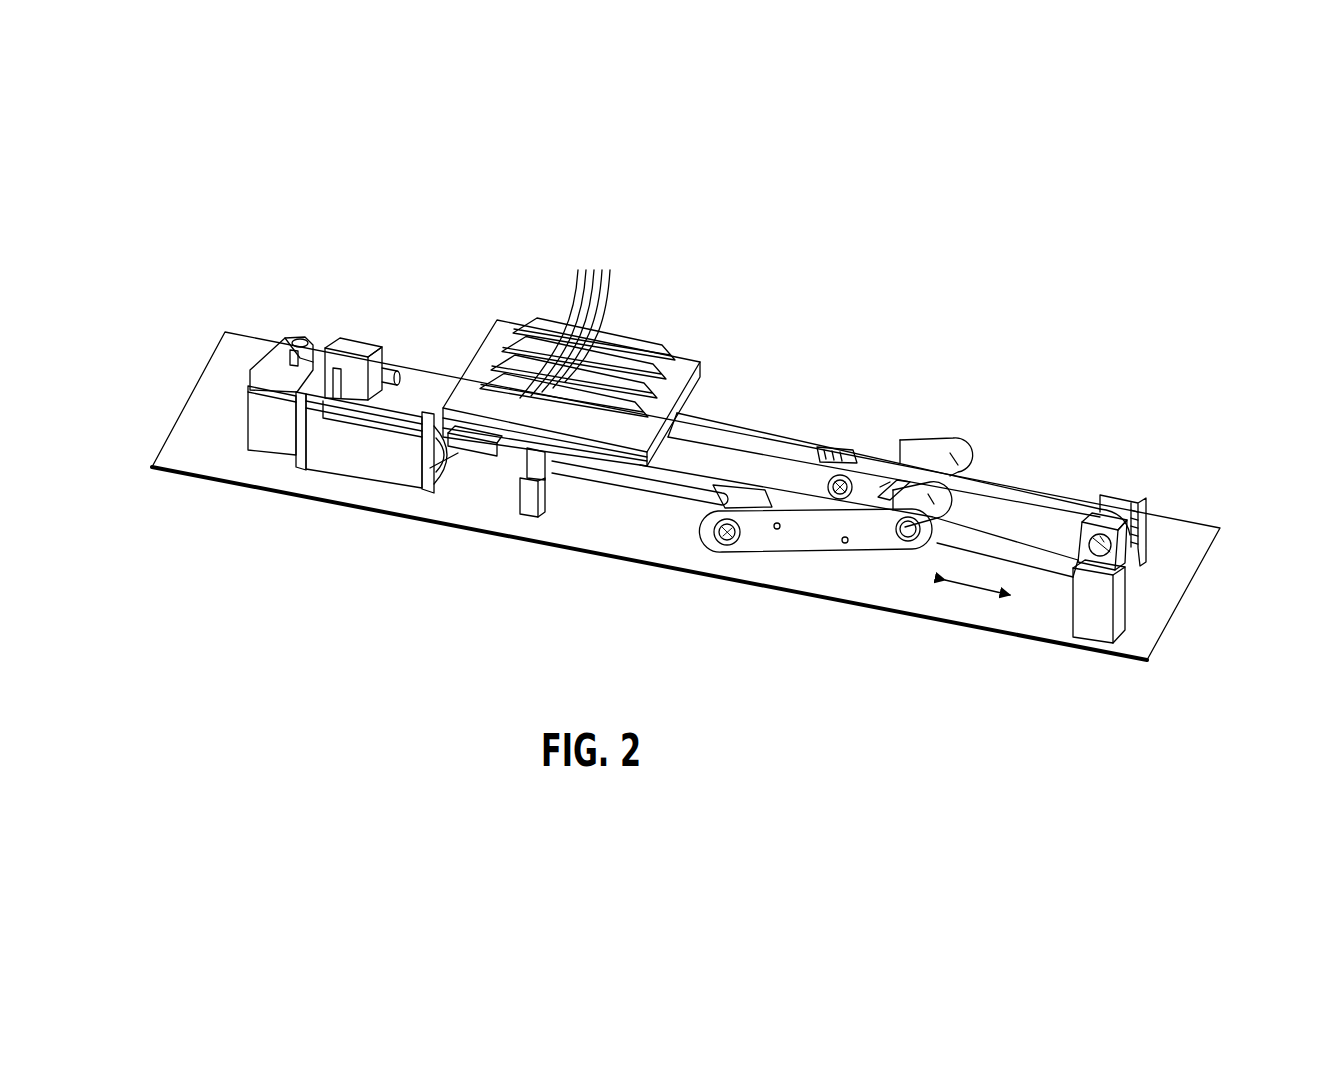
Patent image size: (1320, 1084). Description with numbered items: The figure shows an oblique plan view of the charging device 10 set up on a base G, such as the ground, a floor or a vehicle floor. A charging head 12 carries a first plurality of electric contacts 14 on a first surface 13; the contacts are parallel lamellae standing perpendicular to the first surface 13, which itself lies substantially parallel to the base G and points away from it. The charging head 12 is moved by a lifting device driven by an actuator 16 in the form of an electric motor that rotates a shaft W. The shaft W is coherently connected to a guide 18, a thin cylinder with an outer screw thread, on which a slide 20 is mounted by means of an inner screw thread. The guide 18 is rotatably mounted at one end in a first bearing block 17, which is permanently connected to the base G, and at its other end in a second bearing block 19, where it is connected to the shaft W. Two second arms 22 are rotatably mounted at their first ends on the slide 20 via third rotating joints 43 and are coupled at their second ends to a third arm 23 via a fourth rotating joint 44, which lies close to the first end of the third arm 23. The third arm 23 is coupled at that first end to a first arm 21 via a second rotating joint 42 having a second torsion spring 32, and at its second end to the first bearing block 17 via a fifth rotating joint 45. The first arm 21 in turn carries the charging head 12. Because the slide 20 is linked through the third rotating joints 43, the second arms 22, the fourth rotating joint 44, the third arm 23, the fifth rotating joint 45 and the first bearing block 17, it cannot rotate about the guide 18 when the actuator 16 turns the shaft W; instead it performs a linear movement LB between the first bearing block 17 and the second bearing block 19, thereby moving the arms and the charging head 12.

The charging device 10 is at (340, 309).
The base G is at (220, 405).
The actuator 16 is at (325, 450).
The shaft W is at (465, 443).
The charging head 12 is at (504, 322).
The first surface 13 is at (477, 370).
The electric contacts 14 is at (577, 332).
The second bearing block 19 is at (528, 497).
The guide 18 is at (597, 465).
The slide 20 is at (715, 487).
The first arm 21 is at (775, 440).
The third arm 23 is at (1047, 498).
The second torsion spring 32 is at (840, 463).
The second rotating joint 42 is at (862, 485).
The fourth rotating joint 44 is at (957, 440).
The second arms 22 is at (810, 533).
The third rotating joints 43 is at (727, 545).
The first bearing block 17 is at (1083, 620).
The fifth rotating joint 45 is at (1113, 553).
The linear movement LB is at (987, 597).